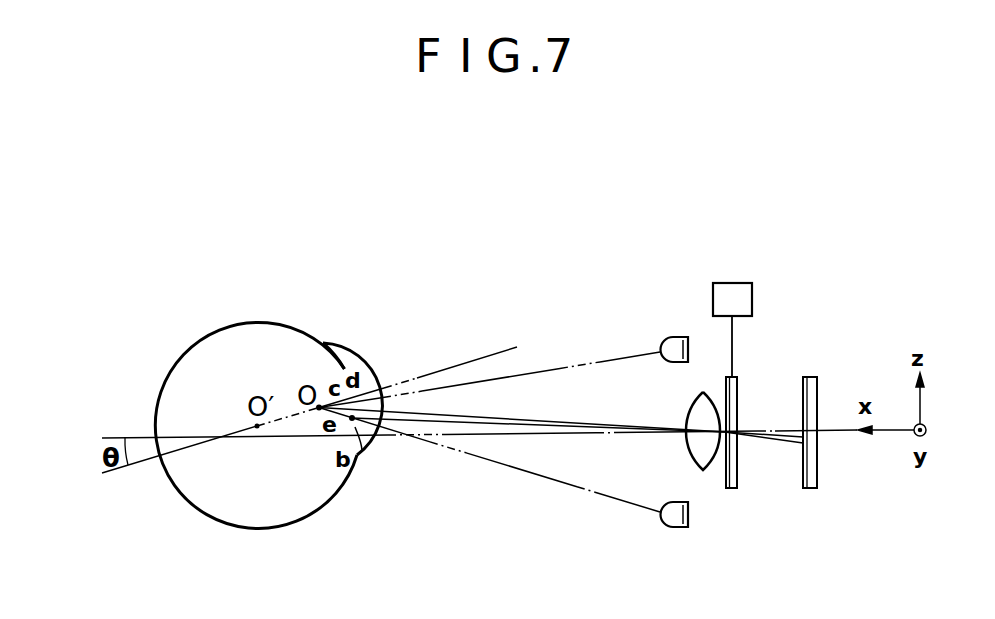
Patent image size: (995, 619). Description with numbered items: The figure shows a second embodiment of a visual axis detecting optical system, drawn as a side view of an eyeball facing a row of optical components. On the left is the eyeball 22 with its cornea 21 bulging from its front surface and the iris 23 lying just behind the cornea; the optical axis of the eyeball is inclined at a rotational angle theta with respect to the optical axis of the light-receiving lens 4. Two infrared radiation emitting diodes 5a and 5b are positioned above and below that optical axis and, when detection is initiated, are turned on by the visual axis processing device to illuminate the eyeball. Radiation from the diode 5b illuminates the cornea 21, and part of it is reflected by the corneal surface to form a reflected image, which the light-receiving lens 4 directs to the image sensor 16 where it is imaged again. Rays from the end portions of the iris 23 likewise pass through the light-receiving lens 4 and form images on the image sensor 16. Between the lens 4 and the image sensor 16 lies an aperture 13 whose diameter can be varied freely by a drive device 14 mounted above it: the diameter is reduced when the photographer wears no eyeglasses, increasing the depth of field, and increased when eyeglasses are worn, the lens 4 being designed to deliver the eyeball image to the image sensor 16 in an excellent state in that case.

The light-receiving lens 4 is at (691, 404).
The infrared radiation emitting diode 5a is at (680, 527).
The infrared radiation emitting diode 5b is at (673, 337).
The aperture 13 is at (733, 488).
The drive device 14 is at (748, 290).
The image sensor 16 is at (817, 379).
The cornea 21 is at (357, 359).
The eyeball 22 is at (317, 337).
The iris 23 is at (334, 354).